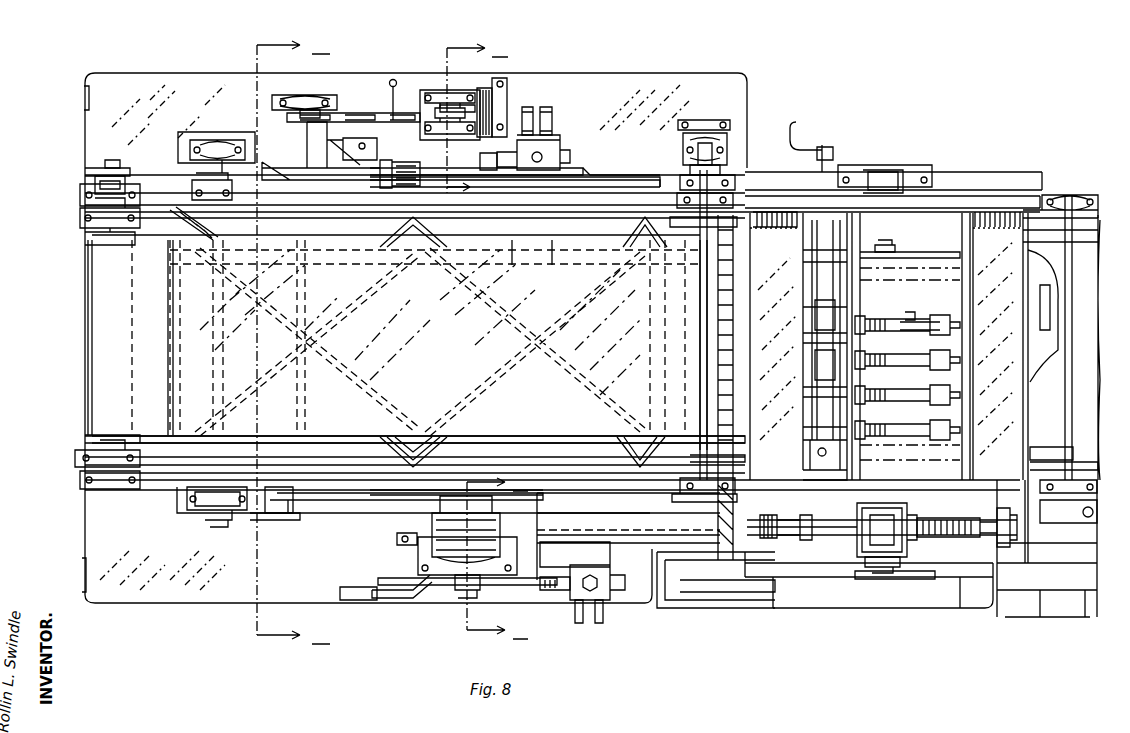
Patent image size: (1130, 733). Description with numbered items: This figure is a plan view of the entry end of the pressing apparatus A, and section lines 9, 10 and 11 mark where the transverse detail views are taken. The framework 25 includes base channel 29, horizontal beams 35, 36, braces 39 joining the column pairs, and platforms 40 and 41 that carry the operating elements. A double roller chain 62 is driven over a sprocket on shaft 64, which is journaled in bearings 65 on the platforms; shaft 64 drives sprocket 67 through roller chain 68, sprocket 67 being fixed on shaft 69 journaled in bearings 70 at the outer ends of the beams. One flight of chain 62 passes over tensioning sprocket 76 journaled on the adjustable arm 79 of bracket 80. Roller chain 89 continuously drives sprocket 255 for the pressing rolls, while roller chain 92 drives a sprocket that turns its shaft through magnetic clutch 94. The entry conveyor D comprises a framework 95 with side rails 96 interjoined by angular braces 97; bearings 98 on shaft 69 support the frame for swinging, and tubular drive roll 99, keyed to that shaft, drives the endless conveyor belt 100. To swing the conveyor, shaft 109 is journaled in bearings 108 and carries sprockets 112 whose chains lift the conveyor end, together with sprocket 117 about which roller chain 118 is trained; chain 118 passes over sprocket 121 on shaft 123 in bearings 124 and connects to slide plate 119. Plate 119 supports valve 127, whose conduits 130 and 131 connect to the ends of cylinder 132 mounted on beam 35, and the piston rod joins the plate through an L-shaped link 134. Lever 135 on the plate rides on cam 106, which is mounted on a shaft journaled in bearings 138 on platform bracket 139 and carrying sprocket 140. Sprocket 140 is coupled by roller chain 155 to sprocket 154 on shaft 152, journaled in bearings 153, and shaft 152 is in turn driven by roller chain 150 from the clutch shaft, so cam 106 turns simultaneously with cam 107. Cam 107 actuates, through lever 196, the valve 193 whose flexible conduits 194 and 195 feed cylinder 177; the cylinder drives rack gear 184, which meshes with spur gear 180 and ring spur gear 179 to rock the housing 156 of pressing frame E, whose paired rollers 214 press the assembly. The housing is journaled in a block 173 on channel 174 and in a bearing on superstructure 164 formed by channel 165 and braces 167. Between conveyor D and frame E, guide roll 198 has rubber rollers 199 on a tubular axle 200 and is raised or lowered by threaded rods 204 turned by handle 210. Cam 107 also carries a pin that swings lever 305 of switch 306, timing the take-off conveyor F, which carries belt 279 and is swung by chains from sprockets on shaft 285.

The pressing apparatus A is at (212, 52).
The entry conveyor D is at (72, 324).
The pressing frame E is at (930, 393).
The take-off conveyor F is at (1070, 198).
The section line 9— 9 is at (497, 556).
The section line 10— 10 is at (478, 123).
The section line 11— 11 is at (294, 340).
The framework 25 is at (686, 603).
The longitudinally arranged channel 29 is at (725, 594).
The horizontally disposed beam 35 is at (585, 197).
The horizontally disposed beam 36 is at (165, 483).
The braces 39 is at (973, 197).
The platform 40 is at (100, 127).
The platform 41 is at (105, 520).
The double roller chain 62 is at (325, 322).
The shaft 64 is at (210, 396).
The bearings 65 is at (215, 140).
The sprocket 67 is at (95, 173).
The roller chain 68 is at (110, 163).
The shaft 69 is at (95, 183).
The bearings 70 is at (82, 199).
The tensioning double sprocket 76 is at (880, 245).
The adjustably positioned arm 79 is at (900, 250).
The bracket 80 is at (962, 248).
The roller chain 89 is at (917, 576).
The roller chain 92 is at (268, 516).
The magnetic clutch 94 is at (418, 548).
The framework 95 is at (512, 242).
The side rails 96 is at (552, 242).
The braces 97 is at (628, 252).
The bearings 98 is at (82, 216).
The tubular drive roll 99 is at (85, 236).
The endless conveyor belt 100 is at (100, 285).
The cam 106 is at (408, 157).
The cam 107 is at (448, 581).
The bearings 108 is at (748, 186).
The shaft 109 is at (703, 398).
The sprockets 112 is at (677, 200).
The sprocket 117 is at (722, 169).
The roller chain 118 is at (624, 172).
The slide plate 119 is at (572, 170).
The sprocket 121 is at (718, 158).
The shaft 123 is at (710, 140).
The bearings 124 is at (700, 140).
The valve 127 is at (545, 155).
The conduit 130 is at (528, 107).
The conduit 131 is at (548, 107).
The cylinder 132 is at (327, 175).
The L-shaped link 134 is at (500, 172).
The lever 135 is at (540, 178).
The bearings 138 is at (505, 82).
The platform bracket 139 is at (484, 88).
The sprocket 140 is at (475, 108).
The roller chain 150 is at (338, 501).
The shaft 152 is at (305, 145).
The bearings 153 is at (300, 97).
The sprocket 154 is at (330, 100).
The roller chain 155 is at (365, 121).
The housing 156 is at (940, 520).
The superstructure 164 is at (974, 590).
The horizontally disposed channel 165 is at (987, 585).
The braces 167 is at (764, 490).
The block 173 is at (885, 178).
The channel 174 is at (940, 183).
The cylinder 177 is at (1070, 530).
The ring spur gear 179 is at (870, 532).
The spur gear 180 is at (812, 535).
The rack gear 184 is at (778, 540).
The valve 193 is at (600, 590).
The flexible conduit 194 is at (579, 624).
The flexible conduit 195 is at (599, 624).
The lever 196 is at (550, 592).
The guide roll 198 is at (806, 295).
The rubber rollers 199 is at (817, 347).
The tubular axle 200 is at (818, 398).
The threaded rods 204 is at (798, 235).
The crank or handle 210 is at (800, 137).
The rollers 214 is at (885, 336).
The sprocket 255 is at (880, 572).
The conveyor belt 279 is at (1045, 425).
The shaft 285 is at (1065, 378).
The lever 305 is at (410, 595).
The switch 306 is at (352, 598).